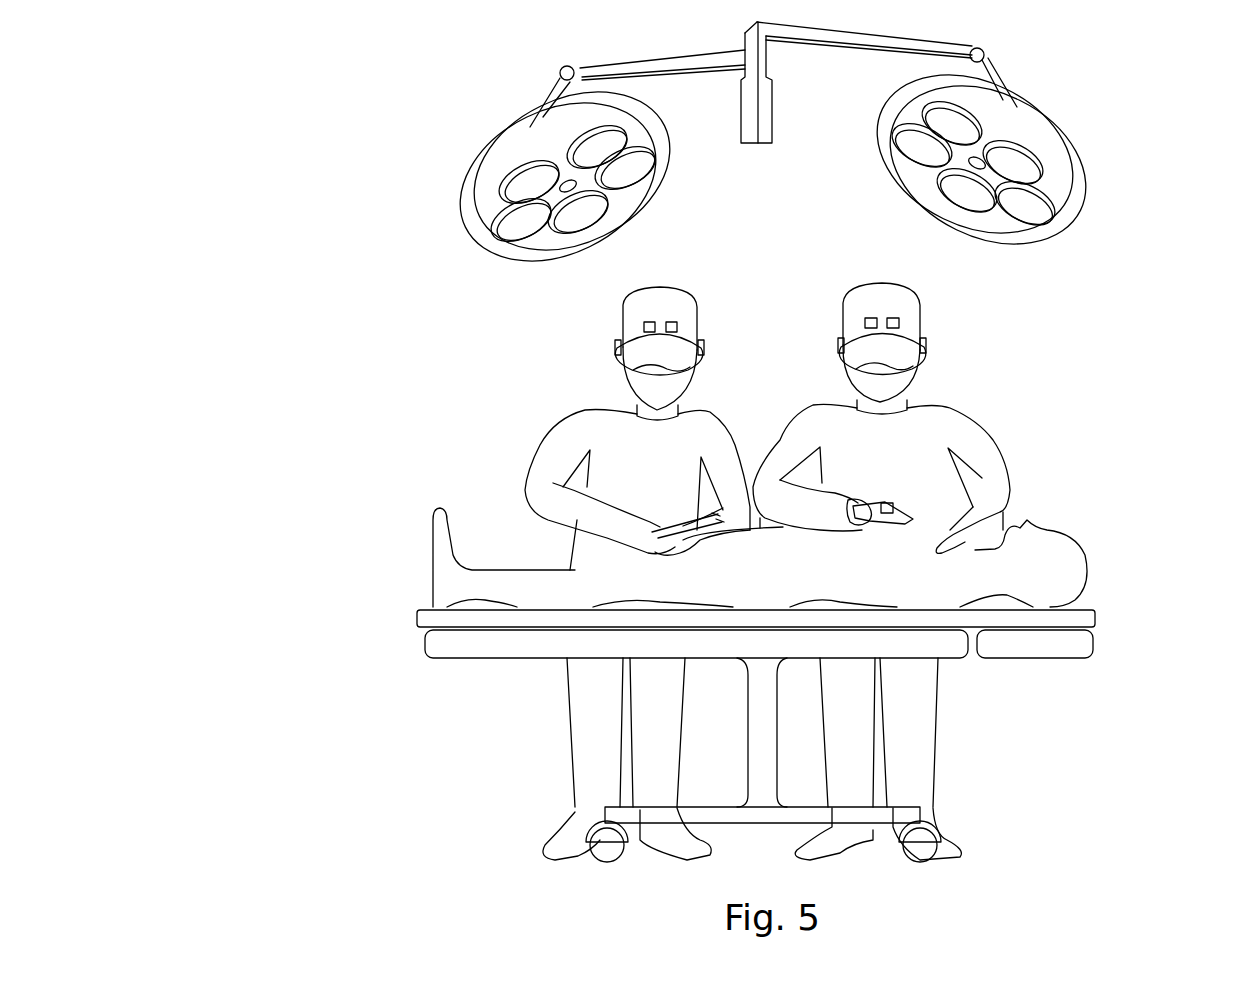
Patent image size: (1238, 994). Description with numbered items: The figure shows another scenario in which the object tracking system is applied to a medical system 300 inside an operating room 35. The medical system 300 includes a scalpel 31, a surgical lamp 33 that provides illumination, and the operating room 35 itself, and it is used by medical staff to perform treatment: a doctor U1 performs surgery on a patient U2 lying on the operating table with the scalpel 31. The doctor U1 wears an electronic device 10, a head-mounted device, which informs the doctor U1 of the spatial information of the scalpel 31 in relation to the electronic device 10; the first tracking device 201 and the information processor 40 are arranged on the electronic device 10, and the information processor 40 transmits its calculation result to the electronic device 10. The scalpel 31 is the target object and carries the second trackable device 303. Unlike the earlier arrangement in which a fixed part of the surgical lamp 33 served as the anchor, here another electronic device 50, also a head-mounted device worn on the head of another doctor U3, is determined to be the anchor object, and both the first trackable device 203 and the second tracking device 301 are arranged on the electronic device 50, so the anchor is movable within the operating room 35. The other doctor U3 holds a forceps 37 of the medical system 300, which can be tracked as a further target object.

The operating room 35 is at (155, 43).
The medical system 300 is at (292, 70).
The scalpel 31 is at (897, 517).
The surgical lamp 33 is at (1028, 76).
The forceps 37 is at (675, 527).
The second tracking device 301 is at (649, 322).
The first trackable device 203 is at (673, 322).
The information processor 40 is at (870, 318).
The first tracking device 201 is at (892, 318).
The electronic device 50 is at (633, 358).
The electronic device 10 is at (907, 353).
The second trackable device 303 is at (888, 503).
The doctor U3 is at (710, 427).
The doctor U1 is at (805, 428).
The patient U2 is at (1075, 565).